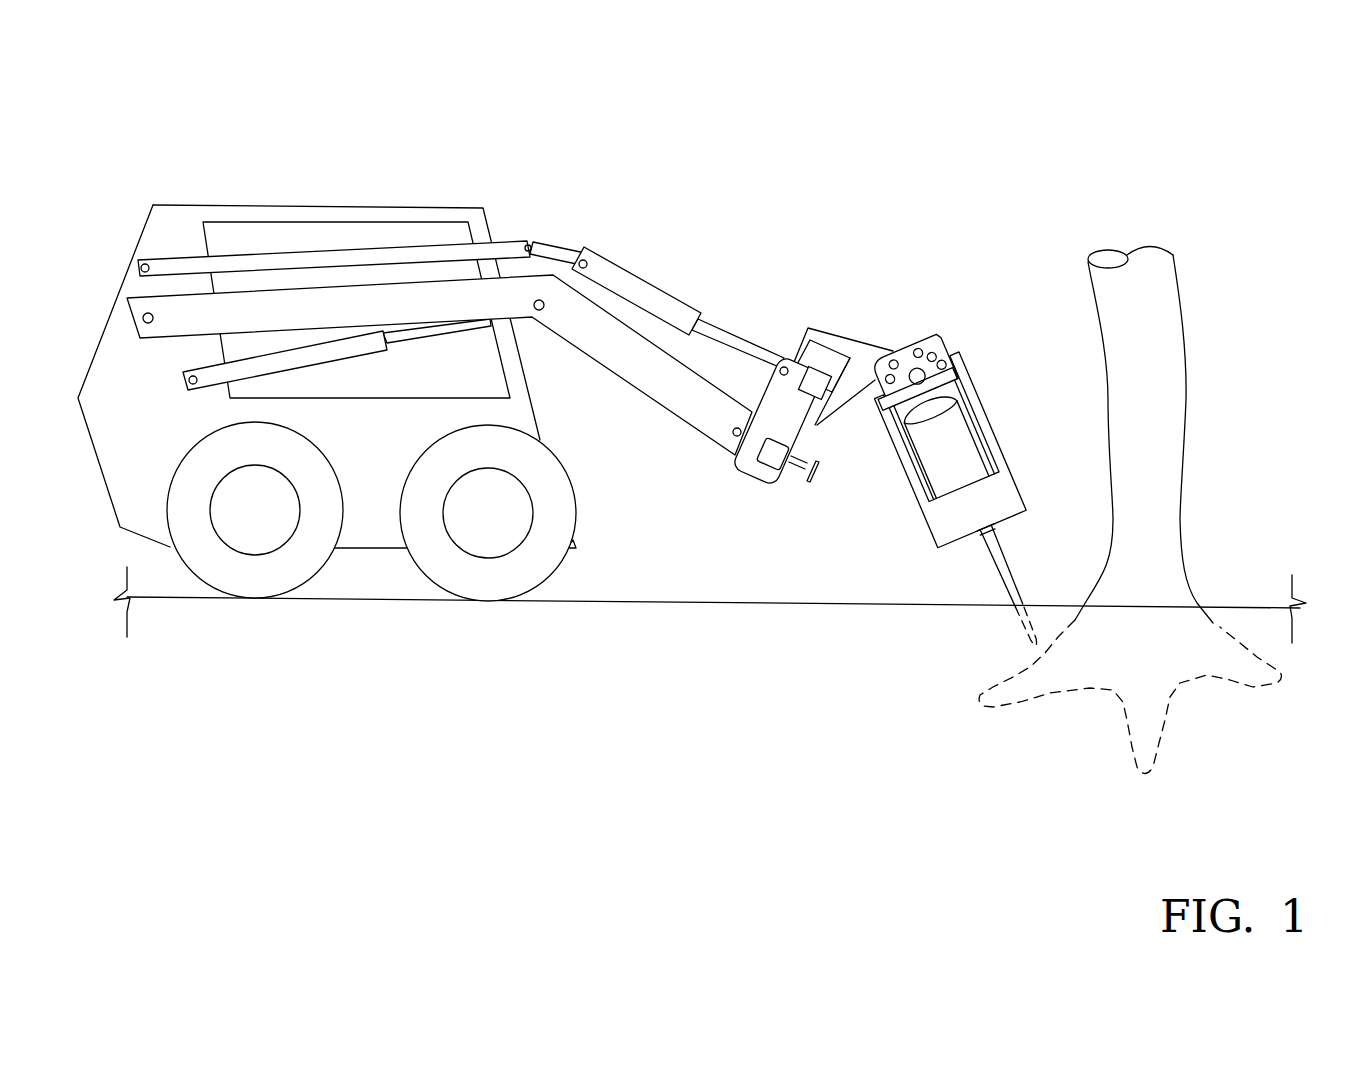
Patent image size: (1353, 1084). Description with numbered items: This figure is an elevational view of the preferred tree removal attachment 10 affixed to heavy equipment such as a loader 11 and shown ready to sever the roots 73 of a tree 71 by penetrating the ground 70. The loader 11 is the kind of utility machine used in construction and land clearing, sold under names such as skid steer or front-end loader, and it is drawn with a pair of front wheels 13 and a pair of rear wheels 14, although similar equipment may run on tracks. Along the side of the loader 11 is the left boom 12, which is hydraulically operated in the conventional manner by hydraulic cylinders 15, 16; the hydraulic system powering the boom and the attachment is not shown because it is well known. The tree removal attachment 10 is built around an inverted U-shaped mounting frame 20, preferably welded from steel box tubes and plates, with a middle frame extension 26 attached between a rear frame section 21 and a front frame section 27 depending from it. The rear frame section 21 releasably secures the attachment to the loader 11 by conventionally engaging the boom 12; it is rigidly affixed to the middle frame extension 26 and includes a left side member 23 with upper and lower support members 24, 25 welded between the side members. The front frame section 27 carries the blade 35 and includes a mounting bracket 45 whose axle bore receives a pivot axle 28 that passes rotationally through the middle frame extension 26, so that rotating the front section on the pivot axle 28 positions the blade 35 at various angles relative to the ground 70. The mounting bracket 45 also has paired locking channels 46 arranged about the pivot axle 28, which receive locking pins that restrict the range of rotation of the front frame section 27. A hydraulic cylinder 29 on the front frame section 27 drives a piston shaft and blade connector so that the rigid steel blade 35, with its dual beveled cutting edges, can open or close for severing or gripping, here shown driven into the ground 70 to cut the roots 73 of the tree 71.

The tree removal attachment 10 is at (913, 240).
The loader 11 is at (361, 176).
The left boom 12 is at (625, 362).
The front wheels 13 is at (467, 583).
The rear wheels 14 is at (230, 580).
The hydraulic cylinder 15 is at (672, 314).
The hydraulic cylinder 16 is at (311, 360).
The inverted U-shaped mounting frame 20 is at (854, 337).
The rear frame section 21 is at (755, 494).
The left side member 23 is at (777, 433).
The upper support member 24 is at (808, 379).
The lower support member 25 is at (760, 462).
The middle frame extension 26 is at (807, 326).
The front frame section 27 is at (999, 411).
The pivot axle 28 is at (912, 371).
The hydraulic cylinder 29 is at (968, 463).
The blade 35 is at (1021, 587).
The mounting bracket 45 is at (909, 346).
The locking channels 46 is at (924, 342).
The ground 70 is at (1233, 601).
The tree 71 is at (1170, 361).
The roots 73 is at (975, 700).